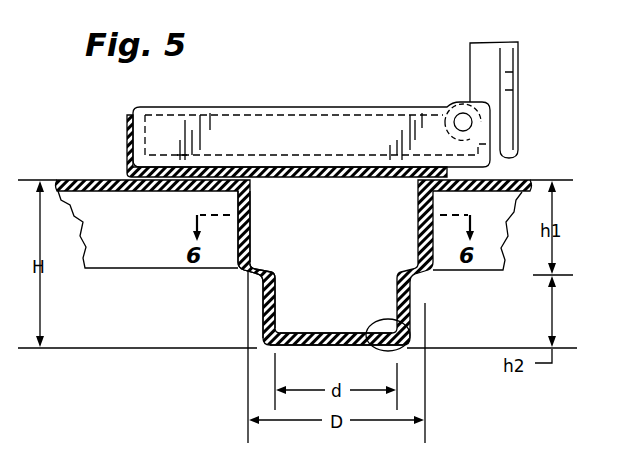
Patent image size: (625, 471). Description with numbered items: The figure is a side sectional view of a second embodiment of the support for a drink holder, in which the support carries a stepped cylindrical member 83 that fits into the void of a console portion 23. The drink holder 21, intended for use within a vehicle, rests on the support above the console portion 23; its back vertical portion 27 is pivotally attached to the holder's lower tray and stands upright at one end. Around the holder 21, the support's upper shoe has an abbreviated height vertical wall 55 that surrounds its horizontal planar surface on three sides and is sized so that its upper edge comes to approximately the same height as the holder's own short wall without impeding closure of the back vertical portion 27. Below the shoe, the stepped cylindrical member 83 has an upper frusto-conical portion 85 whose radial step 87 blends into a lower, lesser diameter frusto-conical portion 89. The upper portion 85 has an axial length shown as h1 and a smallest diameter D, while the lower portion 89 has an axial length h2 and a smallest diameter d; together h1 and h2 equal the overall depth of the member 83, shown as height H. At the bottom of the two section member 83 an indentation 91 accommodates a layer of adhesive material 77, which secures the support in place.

The drink holder 21 is at (333, 92).
The console portion 23 is at (72, 170).
The back vertical portion 27 is at (517, 77).
The vertical wall 55 is at (127, 133).
The layer of adhesive material 77 is at (370, 349).
The stepped cylindrical member 83 is at (380, 233).
The upper frusto-conical portion 85 is at (255, 231).
The radial step 87 is at (258, 262).
The lower frusto-conical portion 89 is at (278, 308).
The indentation 91 is at (402, 322).